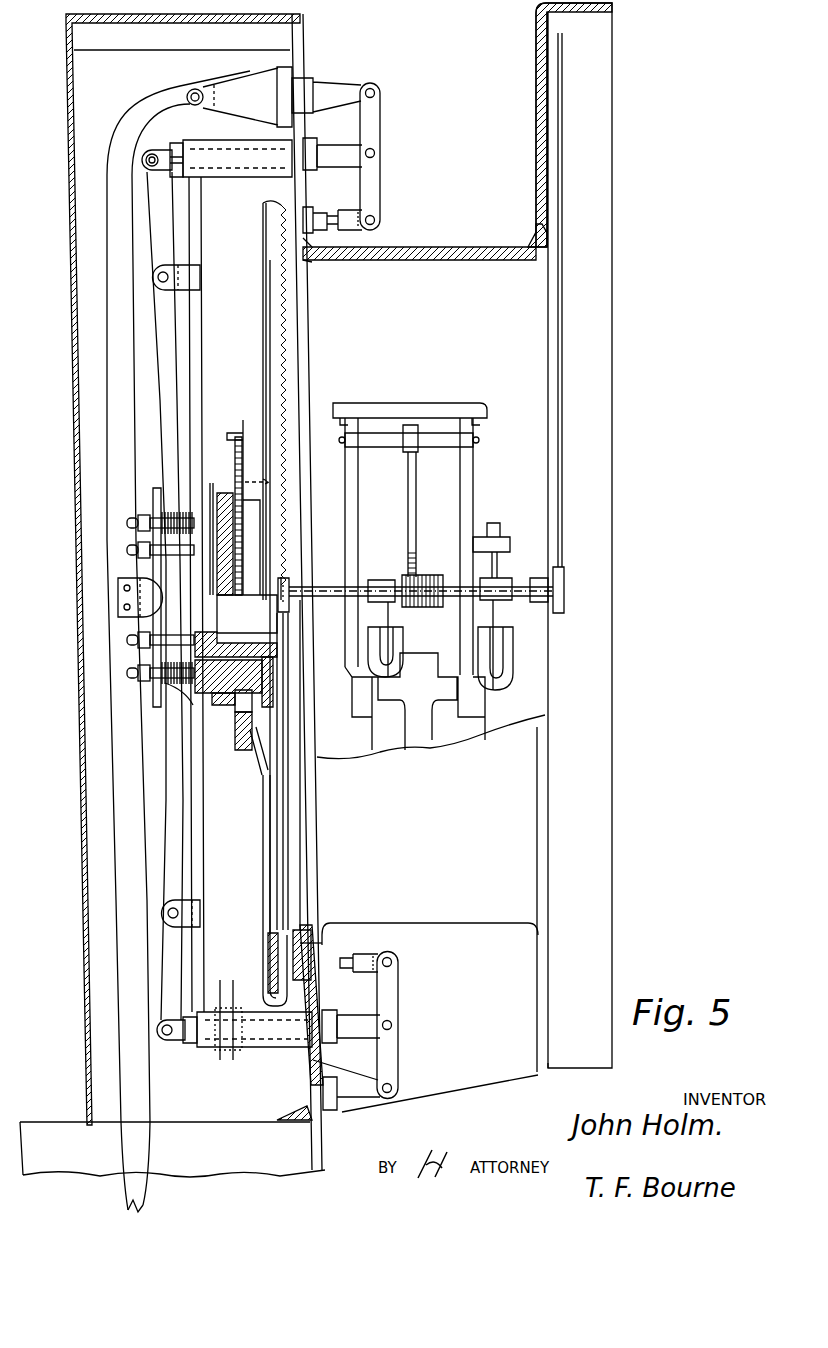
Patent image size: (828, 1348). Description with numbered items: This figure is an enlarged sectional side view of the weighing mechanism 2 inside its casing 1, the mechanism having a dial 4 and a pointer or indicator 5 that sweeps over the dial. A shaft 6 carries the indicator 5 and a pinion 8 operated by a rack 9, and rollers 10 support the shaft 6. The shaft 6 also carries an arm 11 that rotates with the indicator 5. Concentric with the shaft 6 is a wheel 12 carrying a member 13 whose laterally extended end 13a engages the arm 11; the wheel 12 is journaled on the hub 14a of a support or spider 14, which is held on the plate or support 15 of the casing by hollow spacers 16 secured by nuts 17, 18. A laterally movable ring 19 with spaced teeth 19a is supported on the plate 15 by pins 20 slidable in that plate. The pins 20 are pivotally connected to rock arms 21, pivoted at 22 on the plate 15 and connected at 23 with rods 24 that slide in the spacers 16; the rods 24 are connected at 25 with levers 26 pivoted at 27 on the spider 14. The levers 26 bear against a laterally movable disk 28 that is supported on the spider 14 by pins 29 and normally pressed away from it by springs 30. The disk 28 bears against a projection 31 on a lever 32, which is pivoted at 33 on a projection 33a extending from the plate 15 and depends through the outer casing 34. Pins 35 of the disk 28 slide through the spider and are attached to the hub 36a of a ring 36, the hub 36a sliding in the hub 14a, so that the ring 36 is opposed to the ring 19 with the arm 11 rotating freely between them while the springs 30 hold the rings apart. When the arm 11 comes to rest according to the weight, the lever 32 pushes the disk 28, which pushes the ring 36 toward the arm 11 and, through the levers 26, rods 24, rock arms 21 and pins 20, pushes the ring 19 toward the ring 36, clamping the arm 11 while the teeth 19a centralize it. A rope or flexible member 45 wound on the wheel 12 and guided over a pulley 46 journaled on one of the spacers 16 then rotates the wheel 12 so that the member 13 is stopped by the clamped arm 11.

The casing 1 is at (440, 249).
The weighing mechanism 2 is at (440, 488).
The dial 4 is at (536, 150).
The pointer or indicator 5 is at (560, 396).
The shaft 6 is at (517, 589).
The pinion 8 is at (440, 576).
The rack 9 is at (405, 511).
The rollers 10 is at (400, 624).
The arm 11 is at (290, 905).
The wheel 12 is at (246, 757).
The member 13 is at (263, 848).
The laterally extended end 13a is at (275, 986).
The support or spider 14 is at (198, 403).
The hub 14a is at (253, 644).
The plate or support 15 is at (325, 1063).
The hollow spacers 16 is at (237, 177).
The nut 17 is at (178, 137).
The nut 18 is at (310, 143).
The laterally movable ring 19 is at (298, 918).
The spaced teeth 19a is at (264, 301).
The pins 20 is at (332, 223).
The rock arms 21 is at (381, 126).
The pivot 22 is at (378, 91).
The pivotal connection 23 is at (382, 154).
The rods 24 is at (347, 165).
The pivotal connection 25 is at (145, 160).
The levers 26 is at (160, 373).
The pivot 27 is at (182, 275).
The laterally movable plate or disk 28 is at (167, 616).
The pins 29 is at (125, 528).
The springs 30 is at (180, 498).
The projection 31 is at (118, 592).
The lever 32 is at (178, 641).
The pivot 33 is at (195, 88).
The projection 33a is at (236, 86).
The outer casing 34 is at (64, 98).
The pins 35 is at (183, 626).
The ring 36 is at (268, 960).
The hub 36a is at (246, 632).
The rope or flexible member 45 is at (302, 789).
The pulley 46 is at (222, 1056).